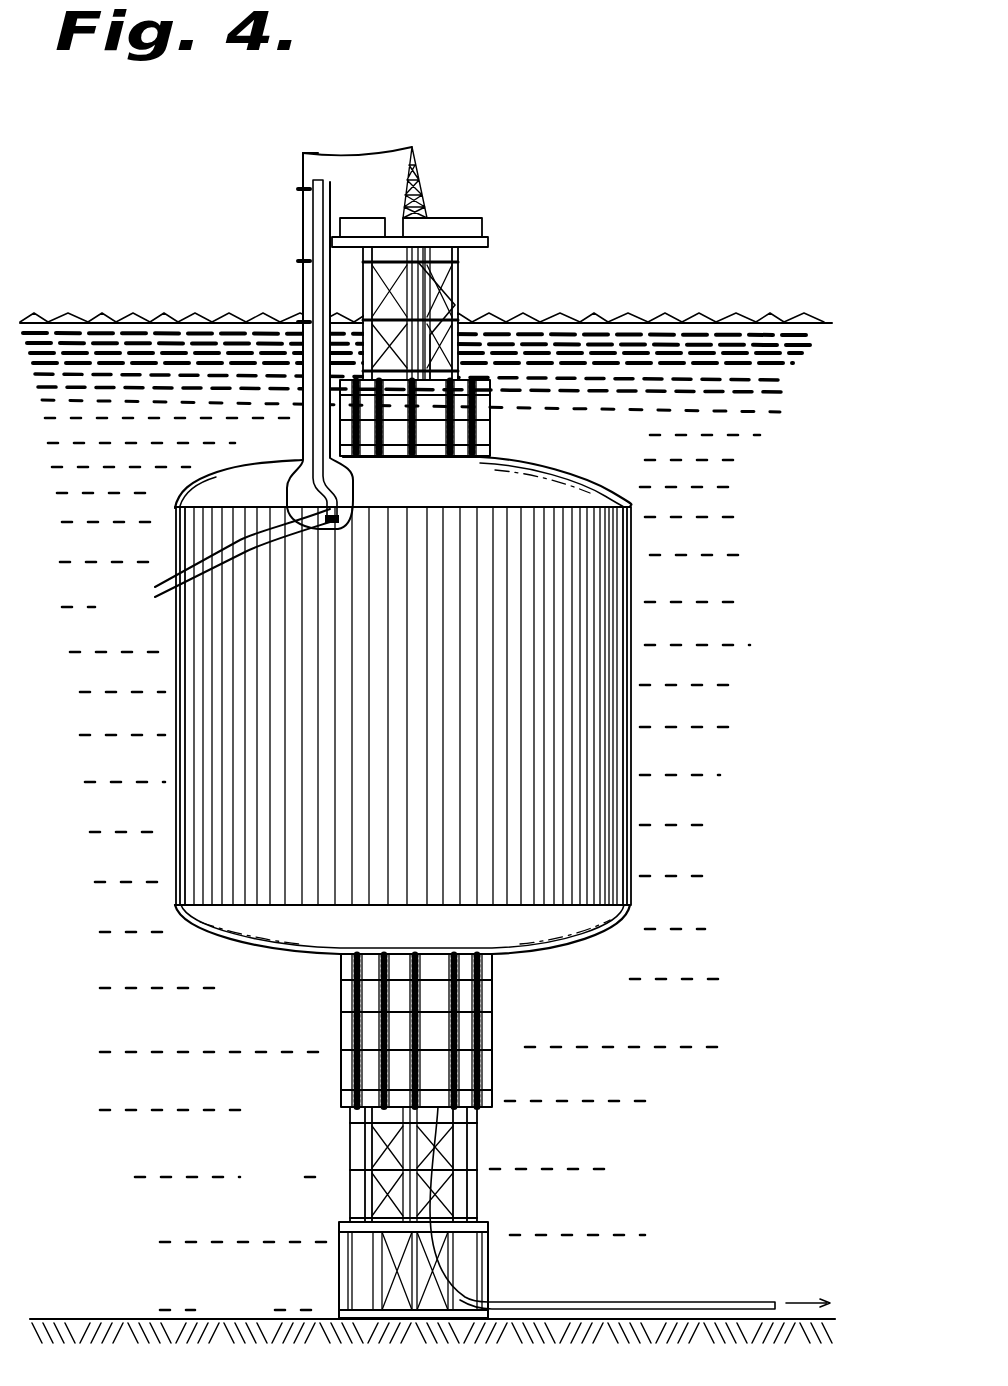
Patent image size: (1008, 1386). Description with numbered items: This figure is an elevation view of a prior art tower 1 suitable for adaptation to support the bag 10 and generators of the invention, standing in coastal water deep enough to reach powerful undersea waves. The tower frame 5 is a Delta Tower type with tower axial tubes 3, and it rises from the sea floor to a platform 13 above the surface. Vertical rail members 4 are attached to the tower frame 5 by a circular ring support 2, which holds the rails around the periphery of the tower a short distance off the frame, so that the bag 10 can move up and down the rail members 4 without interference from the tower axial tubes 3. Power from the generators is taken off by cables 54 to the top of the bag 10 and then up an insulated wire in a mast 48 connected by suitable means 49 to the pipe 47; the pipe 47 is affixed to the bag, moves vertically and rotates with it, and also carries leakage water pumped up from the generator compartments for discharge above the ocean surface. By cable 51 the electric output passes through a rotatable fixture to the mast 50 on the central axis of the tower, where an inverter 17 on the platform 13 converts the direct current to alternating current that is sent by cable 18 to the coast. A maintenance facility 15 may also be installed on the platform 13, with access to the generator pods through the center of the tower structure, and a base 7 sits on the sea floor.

The tower 1 is at (462, 362).
The circular ring support 2 is at (342, 443).
The tower axial tubes 3 is at (352, 1148).
The vertical rail members 4 is at (462, 438).
The tower frame 5 is at (395, 1194).
The base foundation 7 is at (340, 1281).
The bag 10 is at (622, 690).
The platform 13 is at (488, 243).
The maintenance facility 15 is at (367, 227).
The inverter 17 is at (453, 226).
The cable 18 is at (460, 292).
The pipe 47 is at (331, 186).
The mast 48 is at (303, 222).
The suitable means 49 is at (305, 324).
The mast 50 is at (423, 163).
The cable 51 is at (398, 148).
The cables 54 is at (215, 565).